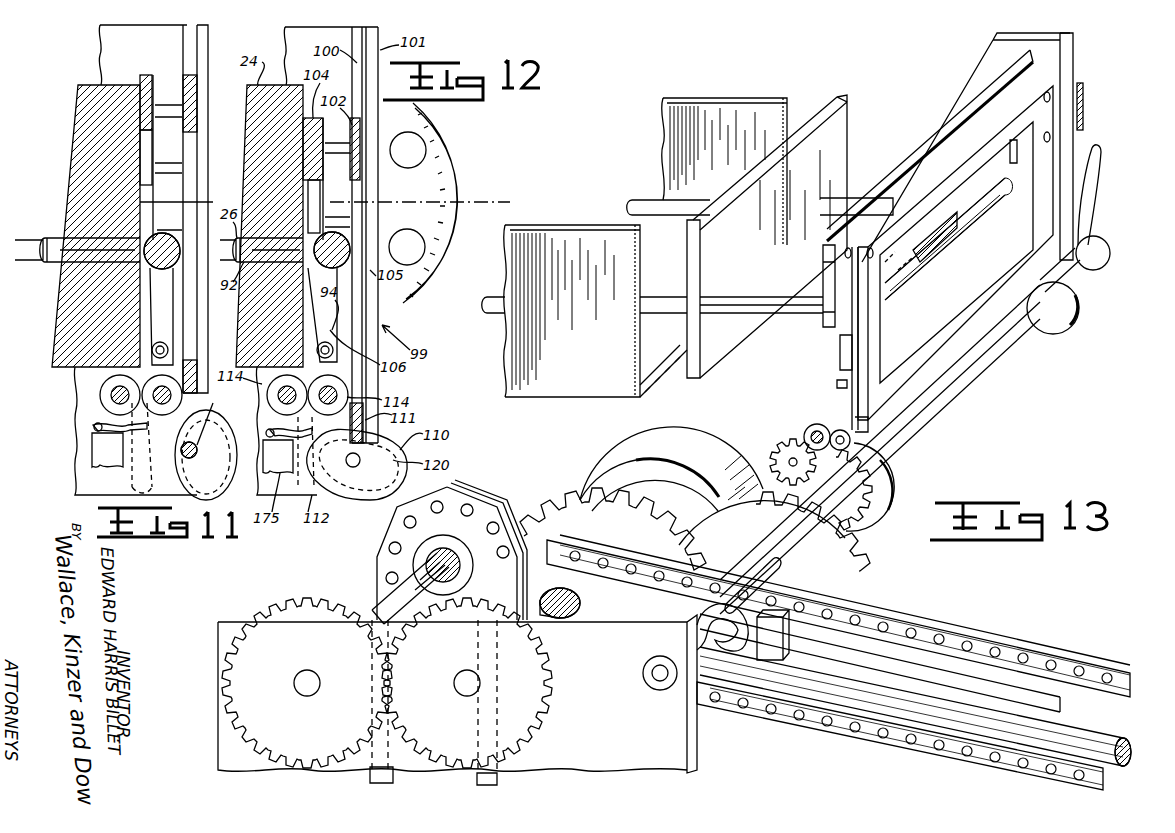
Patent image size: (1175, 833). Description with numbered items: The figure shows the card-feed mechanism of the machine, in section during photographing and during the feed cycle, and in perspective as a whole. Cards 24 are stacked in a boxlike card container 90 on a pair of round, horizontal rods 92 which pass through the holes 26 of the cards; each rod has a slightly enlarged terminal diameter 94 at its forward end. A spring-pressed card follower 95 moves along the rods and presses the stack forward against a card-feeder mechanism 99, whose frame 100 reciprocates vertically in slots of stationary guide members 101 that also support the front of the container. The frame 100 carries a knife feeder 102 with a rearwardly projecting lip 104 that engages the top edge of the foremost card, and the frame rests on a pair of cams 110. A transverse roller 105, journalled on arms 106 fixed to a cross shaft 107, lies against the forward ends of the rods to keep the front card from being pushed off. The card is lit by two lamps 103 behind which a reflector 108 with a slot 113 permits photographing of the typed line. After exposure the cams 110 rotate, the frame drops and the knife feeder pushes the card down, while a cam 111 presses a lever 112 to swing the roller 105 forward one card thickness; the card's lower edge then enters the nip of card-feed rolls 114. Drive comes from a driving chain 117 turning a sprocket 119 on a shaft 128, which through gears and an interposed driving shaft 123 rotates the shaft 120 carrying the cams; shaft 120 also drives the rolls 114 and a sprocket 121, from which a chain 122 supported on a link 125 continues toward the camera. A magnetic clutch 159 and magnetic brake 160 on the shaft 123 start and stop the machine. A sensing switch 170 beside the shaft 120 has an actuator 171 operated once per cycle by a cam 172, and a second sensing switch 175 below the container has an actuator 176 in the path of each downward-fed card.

In FIG. 11, the card 24 is at (83, 85).
In FIG. 11, the hole 26 is at (67, 238).
In FIG. 13, the card container 90 is at (583, 225).
In FIG. 11, the rod 92 is at (53, 262).
In FIG. 13, the rod 92 is at (640, 198).
In FIG. 11, the enlarged terminal diameter 94 is at (176, 194).
In FIG. 13, the enlarged terminal diameter 94 is at (987, 200).
In FIG. 13, the card follower 95 is at (847, 127).
In FIG. 11, the card-feeder mechanism 99 is at (217, 67).
In FIG. 13, the card-feeder mechanism 99 is at (1094, 99).
In FIG. 11, the frame 100 is at (190, 340).
In FIG. 13, the frame 100 is at (1028, 158).
In FIG. 11, the guide member 101 is at (200, 130).
In FIG. 13, the guide member 101 is at (983, 70).
In FIG. 11, the knife feeder 102 is at (185, 100).
In FIG. 13, the knife feeder 102 is at (903, 180).
In FIG. 12, the lamp 103 is at (420, 147).
In FIG. 11, the lip 104 is at (143, 77).
In FIG. 11, the transverse roller 105 is at (178, 235).
In FIG. 13, the transverse roller 105 is at (935, 240).
In FIG. 11, the arm 106 is at (162, 312).
In FIG. 13, the arm 106 is at (840, 357).
In FIG. 13, the cross shaft 107 is at (920, 265).
In FIG. 12, the reflector 108 is at (450, 167).
In FIG. 11, the cam 110 is at (235, 470).
In FIG. 13, the cam 110 is at (1035, 330).
In FIG. 11, the cam 111 is at (152, 495).
In FIG. 13, the cam 111 is at (1097, 267).
In FIG. 11, the lever 112 is at (135, 495).
In FIG. 13, the lever 112 is at (1087, 187).
In FIG. 12, the slot 113 is at (450, 200).
In FIG. 11, the card-feed roll 114 is at (70, 417).
In FIG. 13, the card-feed roll 114 is at (813, 433).
In FIG. 13, the driving chain 117 is at (497, 780).
In FIG. 13, the sprocket 119 is at (463, 527).
In FIG. 11, the shaft 120 is at (208, 410).
In FIG. 13, the shaft 120 is at (907, 447).
In FIG. 13, the sprocket 121 is at (570, 532).
In FIG. 13, the chain 122 is at (1023, 657).
In FIG. 13, the driving shaft 123 is at (462, 697).
In FIG. 13, the link 125 is at (1037, 712).
In FIG. 13, the shaft 128 is at (303, 697).
In FIG. 13, the magnetic clutch 159 is at (567, 620).
In FIG. 13, the magnetic brake 160 is at (710, 437).
In FIG. 13, the sensing switch 170 is at (785, 650).
In FIG. 13, the actuator 171 is at (753, 653).
In FIG. 13, the cam 172 is at (737, 583).
In FIG. 11, the sensing switch 175 is at (87, 467).
In FIG. 11, the actuator 176 is at (230, 420).